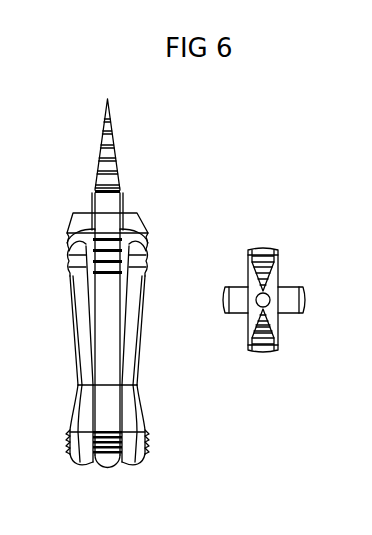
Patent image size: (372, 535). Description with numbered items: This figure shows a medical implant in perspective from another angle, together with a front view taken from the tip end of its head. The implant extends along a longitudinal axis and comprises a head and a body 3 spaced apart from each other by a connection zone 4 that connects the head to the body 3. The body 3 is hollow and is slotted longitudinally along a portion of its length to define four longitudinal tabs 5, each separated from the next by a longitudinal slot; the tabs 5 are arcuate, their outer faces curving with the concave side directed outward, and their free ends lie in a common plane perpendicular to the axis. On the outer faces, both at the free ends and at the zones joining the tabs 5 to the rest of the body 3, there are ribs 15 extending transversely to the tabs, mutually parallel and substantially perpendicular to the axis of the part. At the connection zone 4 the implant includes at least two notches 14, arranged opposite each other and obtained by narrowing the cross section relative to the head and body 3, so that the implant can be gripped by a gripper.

The body 3 is at (135, 223).
The connection zone 4 is at (122, 201).
The longitudinal tabs 5 is at (137, 338).
The notches 14 is at (95, 203).
The ribs 15 is at (147, 442).